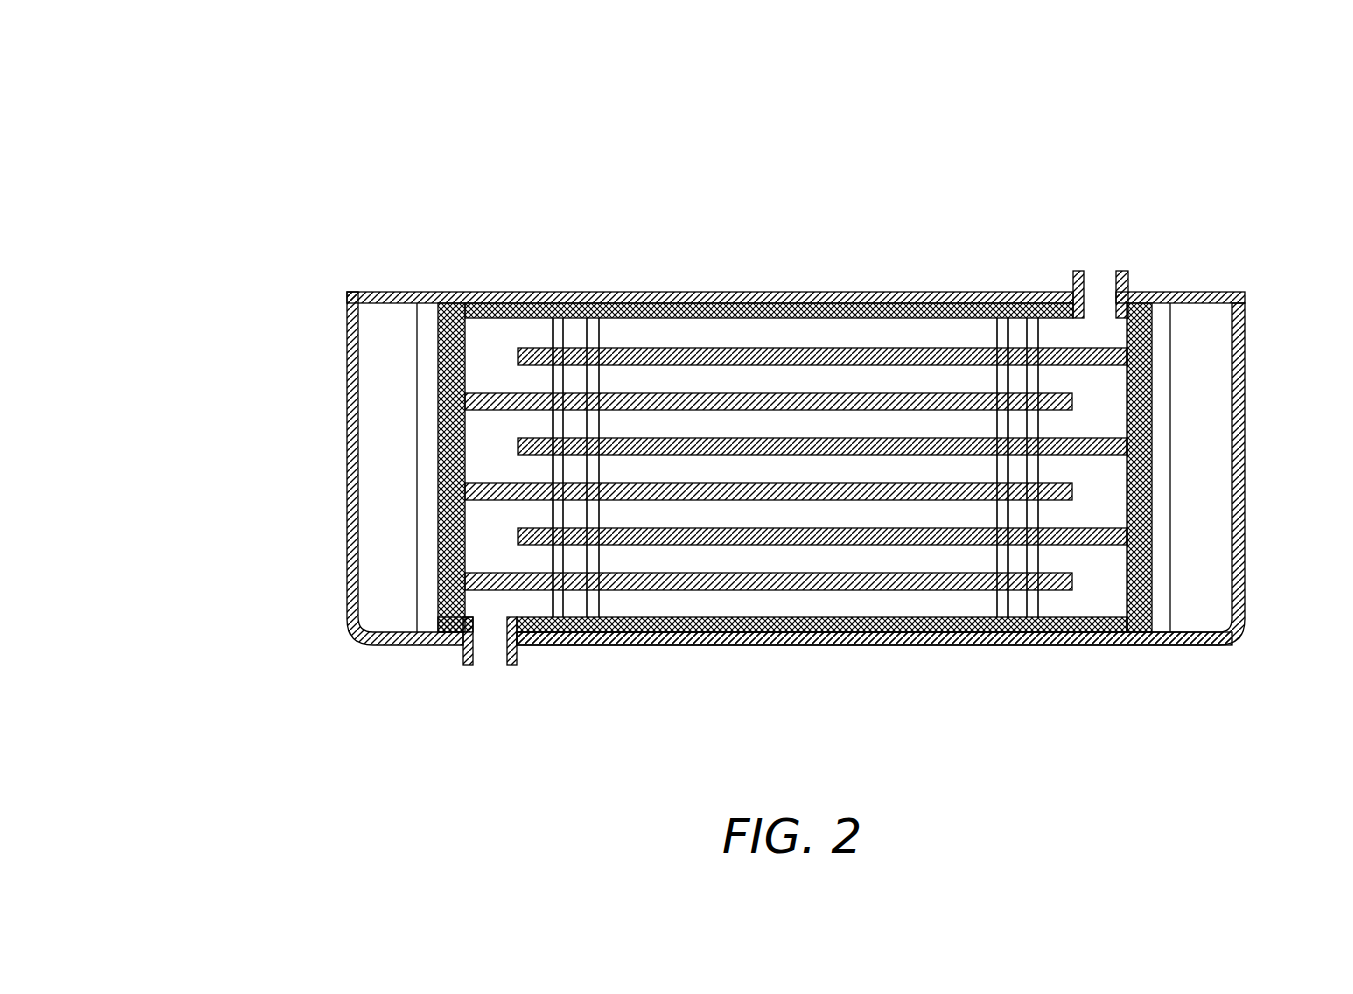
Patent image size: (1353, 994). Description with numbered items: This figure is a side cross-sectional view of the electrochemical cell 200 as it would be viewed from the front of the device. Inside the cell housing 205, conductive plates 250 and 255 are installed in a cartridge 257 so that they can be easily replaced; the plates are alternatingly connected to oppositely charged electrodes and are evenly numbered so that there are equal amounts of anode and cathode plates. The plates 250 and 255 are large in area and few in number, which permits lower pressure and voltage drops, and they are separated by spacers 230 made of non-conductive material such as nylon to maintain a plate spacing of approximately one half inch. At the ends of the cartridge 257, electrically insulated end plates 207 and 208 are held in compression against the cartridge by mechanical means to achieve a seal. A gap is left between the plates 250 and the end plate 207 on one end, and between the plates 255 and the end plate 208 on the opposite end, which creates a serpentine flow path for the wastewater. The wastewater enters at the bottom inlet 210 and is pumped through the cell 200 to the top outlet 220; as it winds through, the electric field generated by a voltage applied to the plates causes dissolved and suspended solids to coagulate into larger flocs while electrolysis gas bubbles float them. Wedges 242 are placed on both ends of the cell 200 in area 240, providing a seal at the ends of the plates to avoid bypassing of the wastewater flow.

The electrochemical cell 200 is at (290, 170).
The cell housing 205 is at (932, 633).
The end plate 207 is at (1100, 600).
The end plate 208 is at (435, 625).
The bottom inlet 210 is at (486, 670).
The top outlet 220 is at (1098, 258).
The spacers 230 is at (618, 295).
The area 240 is at (388, 525).
The wedges 242 is at (374, 315).
The conductive plates 250 is at (877, 585).
The conductive plates 255 is at (750, 540).
The cartridge 257 is at (858, 272).